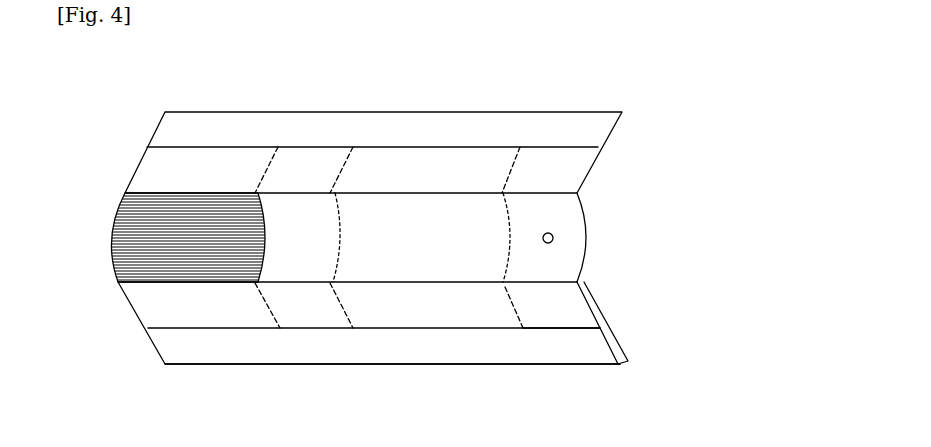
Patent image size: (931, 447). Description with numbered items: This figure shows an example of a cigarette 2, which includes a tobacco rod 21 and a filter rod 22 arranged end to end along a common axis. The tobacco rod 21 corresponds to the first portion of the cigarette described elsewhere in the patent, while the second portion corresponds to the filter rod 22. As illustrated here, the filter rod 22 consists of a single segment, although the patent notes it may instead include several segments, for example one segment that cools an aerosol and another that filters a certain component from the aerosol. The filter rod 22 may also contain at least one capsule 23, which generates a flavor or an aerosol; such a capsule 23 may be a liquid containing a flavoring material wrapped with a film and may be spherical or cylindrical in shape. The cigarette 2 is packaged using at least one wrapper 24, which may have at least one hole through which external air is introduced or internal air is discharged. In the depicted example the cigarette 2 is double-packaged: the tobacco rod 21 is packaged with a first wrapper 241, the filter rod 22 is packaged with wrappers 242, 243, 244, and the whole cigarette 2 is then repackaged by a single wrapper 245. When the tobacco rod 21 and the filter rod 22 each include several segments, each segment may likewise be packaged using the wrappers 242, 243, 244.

The cigarette 2 is at (604, 86).
The tobacco rod 21 is at (112, 238).
The filter rod 22 is at (407, 207).
The capsule 23 is at (553, 238).
The wrapper 24 is at (607, 318).
The first wrapper 241 is at (205, 315).
The wrapper 242 is at (307, 315).
The wrapper 243 is at (433, 313).
The wrapper 244 is at (555, 313).
The single wrapper 245 is at (507, 357).